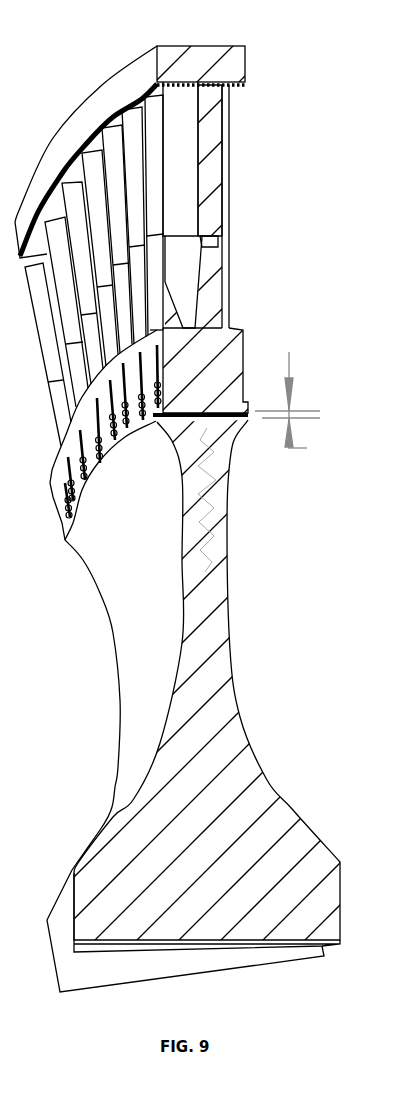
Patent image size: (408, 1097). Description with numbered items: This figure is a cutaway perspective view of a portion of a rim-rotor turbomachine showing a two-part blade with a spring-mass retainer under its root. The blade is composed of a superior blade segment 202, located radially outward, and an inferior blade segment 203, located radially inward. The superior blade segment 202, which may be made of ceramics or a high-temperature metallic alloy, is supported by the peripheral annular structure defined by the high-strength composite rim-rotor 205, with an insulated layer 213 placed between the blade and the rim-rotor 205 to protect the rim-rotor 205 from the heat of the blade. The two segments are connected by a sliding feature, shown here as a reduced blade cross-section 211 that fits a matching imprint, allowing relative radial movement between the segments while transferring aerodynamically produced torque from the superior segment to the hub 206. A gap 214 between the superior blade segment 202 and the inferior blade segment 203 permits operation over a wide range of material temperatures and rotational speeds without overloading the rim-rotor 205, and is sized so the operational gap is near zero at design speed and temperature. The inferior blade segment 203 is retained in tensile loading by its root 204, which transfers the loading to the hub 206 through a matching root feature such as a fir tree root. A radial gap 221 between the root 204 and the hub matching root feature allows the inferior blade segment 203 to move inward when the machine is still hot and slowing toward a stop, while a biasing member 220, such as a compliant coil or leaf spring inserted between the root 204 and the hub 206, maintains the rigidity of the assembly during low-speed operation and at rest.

The superior blade segment 202 is at (207, 160).
The inferior blade segment 203 is at (215, 298).
The root 204 is at (287, 333).
The rim-rotor 205 is at (200, 67).
The hub 206 is at (203, 659).
The reduced blade cross-section 211 is at (231, 216).
The insulated layer 213 is at (276, 86).
The gap 214 is at (257, 234).
The biasing member 220 is at (238, 476).
The radial gap 221 is at (313, 411).